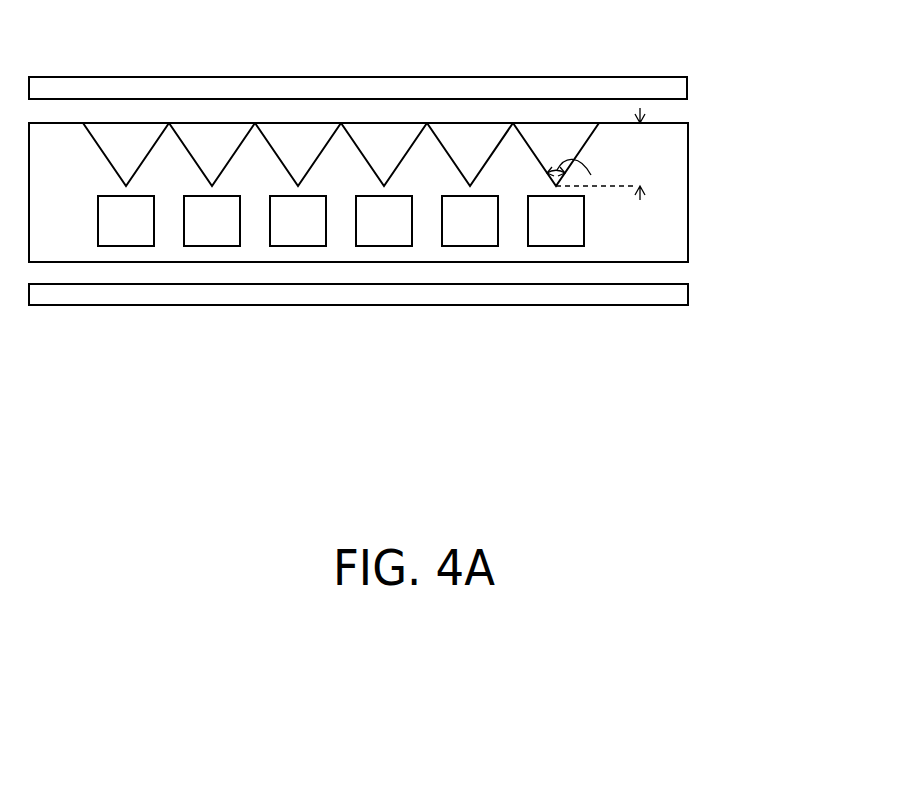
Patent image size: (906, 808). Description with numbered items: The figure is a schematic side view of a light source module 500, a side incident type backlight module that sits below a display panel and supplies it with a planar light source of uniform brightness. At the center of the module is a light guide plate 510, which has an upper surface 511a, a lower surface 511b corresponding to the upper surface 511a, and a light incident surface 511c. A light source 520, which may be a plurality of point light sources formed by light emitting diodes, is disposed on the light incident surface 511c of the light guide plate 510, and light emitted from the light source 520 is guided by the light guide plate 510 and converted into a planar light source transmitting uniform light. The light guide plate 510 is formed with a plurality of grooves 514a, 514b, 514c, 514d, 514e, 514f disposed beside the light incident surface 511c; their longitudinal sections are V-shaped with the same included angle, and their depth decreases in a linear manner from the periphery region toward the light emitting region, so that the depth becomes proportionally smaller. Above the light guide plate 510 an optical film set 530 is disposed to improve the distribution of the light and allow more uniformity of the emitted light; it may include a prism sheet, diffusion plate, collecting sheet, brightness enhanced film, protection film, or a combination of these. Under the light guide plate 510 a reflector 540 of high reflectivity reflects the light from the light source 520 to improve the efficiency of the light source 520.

The light source module 500 is at (676, 323).
The light guide plate 510 is at (680, 192).
The upper surface 511a is at (668, 111).
The lower surface 511b is at (671, 274).
The light incident surface 511c is at (63, 227).
The groove 514a is at (126, 170).
The groove 514b is at (212, 170).
The groove 514c is at (298, 170).
The groove 514d is at (384, 170).
The groove 514e is at (470, 170).
The groove 514f is at (556, 170).
The light source 520 is at (567, 206).
The optical film set 530 is at (682, 88).
The reflector 540 is at (678, 295).